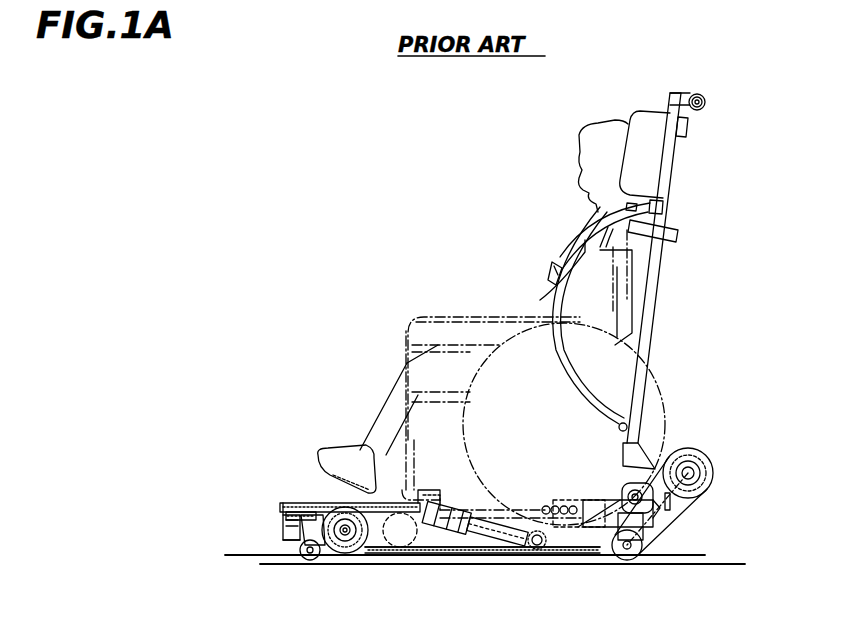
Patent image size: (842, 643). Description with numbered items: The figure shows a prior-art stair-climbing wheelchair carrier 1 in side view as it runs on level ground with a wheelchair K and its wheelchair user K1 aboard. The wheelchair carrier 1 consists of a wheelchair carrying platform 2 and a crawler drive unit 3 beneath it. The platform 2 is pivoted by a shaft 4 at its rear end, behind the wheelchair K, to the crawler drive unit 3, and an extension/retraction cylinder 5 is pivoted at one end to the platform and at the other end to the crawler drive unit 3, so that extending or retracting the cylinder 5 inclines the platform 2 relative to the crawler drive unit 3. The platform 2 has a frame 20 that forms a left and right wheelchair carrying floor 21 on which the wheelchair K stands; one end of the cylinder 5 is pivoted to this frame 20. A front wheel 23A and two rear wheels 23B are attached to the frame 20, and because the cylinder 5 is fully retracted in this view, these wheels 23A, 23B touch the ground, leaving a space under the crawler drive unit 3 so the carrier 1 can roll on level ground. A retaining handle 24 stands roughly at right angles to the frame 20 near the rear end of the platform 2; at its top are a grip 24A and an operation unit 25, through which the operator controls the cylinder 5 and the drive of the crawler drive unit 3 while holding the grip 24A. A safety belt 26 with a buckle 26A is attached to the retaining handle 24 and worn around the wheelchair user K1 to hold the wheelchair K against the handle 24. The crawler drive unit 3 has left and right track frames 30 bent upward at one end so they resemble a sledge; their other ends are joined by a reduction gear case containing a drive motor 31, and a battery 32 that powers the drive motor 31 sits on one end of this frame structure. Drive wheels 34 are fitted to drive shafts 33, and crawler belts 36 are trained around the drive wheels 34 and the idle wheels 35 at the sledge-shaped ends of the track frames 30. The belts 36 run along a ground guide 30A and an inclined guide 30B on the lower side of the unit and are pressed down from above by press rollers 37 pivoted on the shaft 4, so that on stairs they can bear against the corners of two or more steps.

The wheelchair carrier 1 is at (692, 300).
The wheelchair carrying platform 2 is at (289, 496).
The crawler drive unit 3 is at (541, 569).
The shaft 4 is at (626, 490).
The extension/retraction cylinder 5 is at (460, 515).
The frame 20 is at (282, 521).
The wheelchair carrying floor 21 is at (318, 503).
The front wheel 23A is at (300, 560).
The rear wheels 23B is at (643, 551).
The retaining handle 24 is at (645, 320).
The grip 24A is at (705, 103).
The operation unit 25 is at (690, 130).
The safety belt 26 is at (567, 373).
The buckle 26A is at (556, 272).
The track frames 30 is at (455, 543).
The ground guide 30A is at (428, 554).
The inclined guide 30B is at (676, 514).
The drive motor 31 is at (399, 548).
The battery 32 is at (574, 505).
The drive shafts 33 is at (343, 543).
The drive wheels 34 is at (355, 555).
The idle wheels 35 is at (714, 465).
The crawler belts 36 is at (518, 508).
The press rollers 37 is at (652, 468).
The wheelchair K is at (471, 310).
The wheelchair user K1 is at (615, 165).